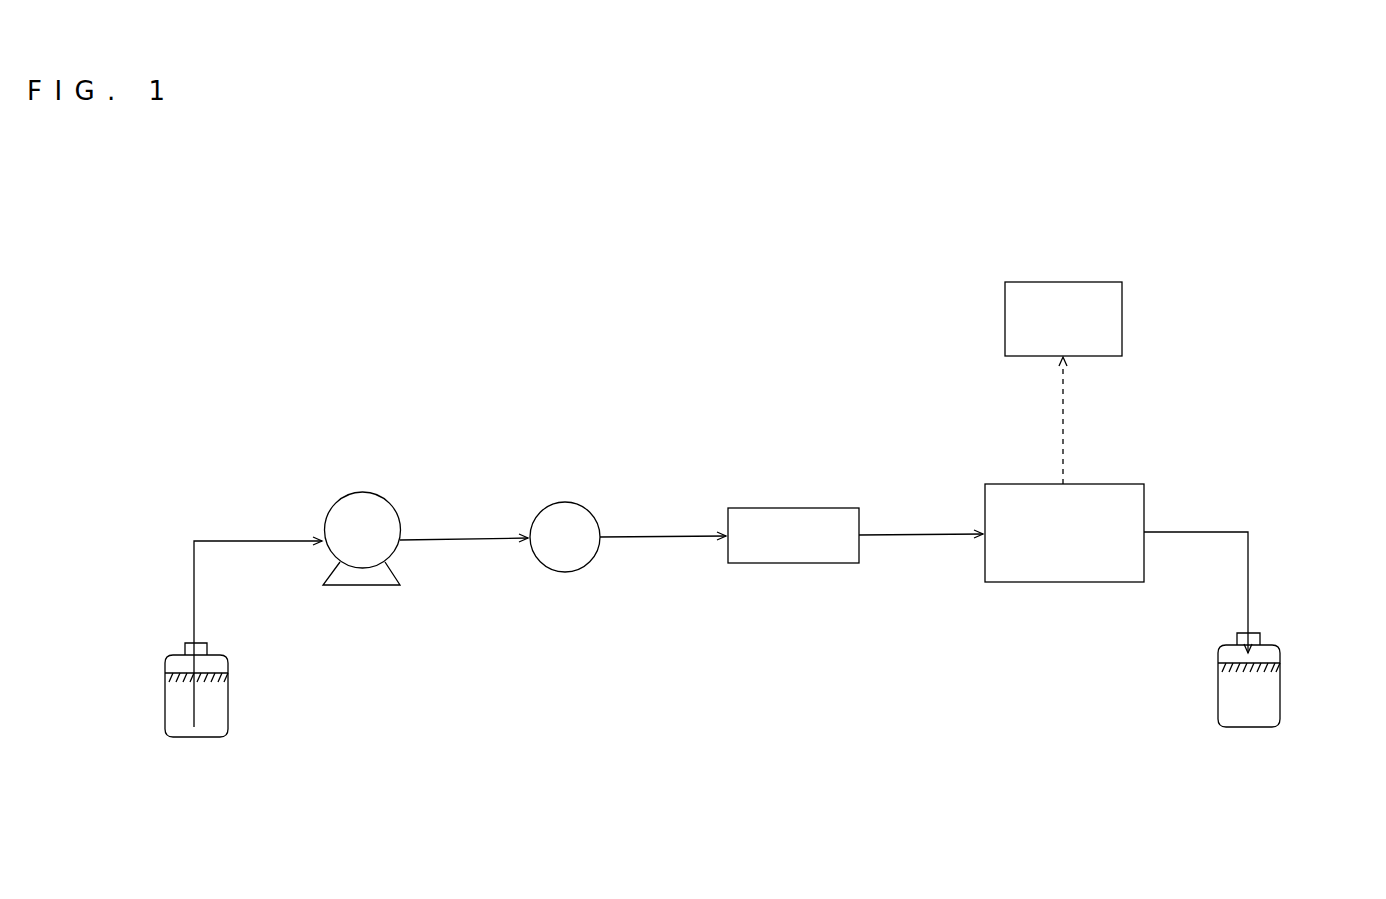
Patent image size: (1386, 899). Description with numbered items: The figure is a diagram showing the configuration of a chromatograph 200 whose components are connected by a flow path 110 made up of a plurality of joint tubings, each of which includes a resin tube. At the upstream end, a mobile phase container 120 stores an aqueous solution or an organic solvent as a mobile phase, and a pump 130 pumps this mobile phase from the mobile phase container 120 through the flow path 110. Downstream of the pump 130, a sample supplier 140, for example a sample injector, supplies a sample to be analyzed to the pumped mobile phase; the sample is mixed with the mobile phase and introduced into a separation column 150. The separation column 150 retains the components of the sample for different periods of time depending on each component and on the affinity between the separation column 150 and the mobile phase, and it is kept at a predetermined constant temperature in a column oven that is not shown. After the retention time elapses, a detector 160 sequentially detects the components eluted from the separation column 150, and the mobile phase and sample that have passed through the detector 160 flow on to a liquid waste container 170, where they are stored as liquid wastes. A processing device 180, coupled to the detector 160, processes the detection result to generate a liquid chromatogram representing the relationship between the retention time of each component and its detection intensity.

The flow path 110 is at (257, 540).
The mobile phase container 120 is at (197, 737).
The pump 130 is at (362, 492).
The sample supplier 140 is at (565, 502).
The separation column 150 is at (793, 508).
The detector 160 is at (1080, 484).
The liquid waste container 170 is at (1248, 727).
The processing device 180 is at (1063, 282).
The chromatograph 200 is at (1374, 213).